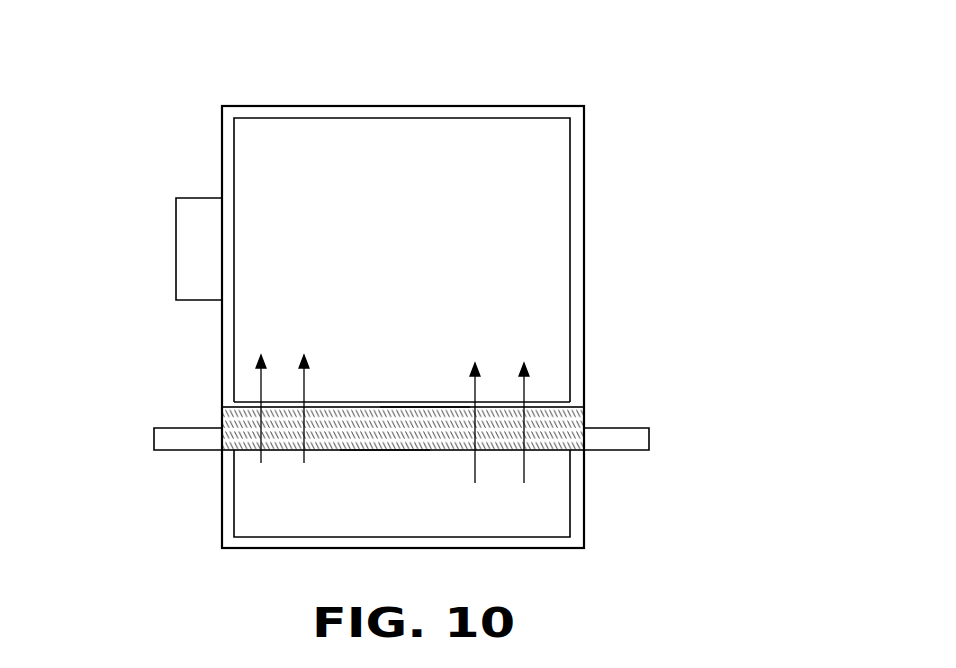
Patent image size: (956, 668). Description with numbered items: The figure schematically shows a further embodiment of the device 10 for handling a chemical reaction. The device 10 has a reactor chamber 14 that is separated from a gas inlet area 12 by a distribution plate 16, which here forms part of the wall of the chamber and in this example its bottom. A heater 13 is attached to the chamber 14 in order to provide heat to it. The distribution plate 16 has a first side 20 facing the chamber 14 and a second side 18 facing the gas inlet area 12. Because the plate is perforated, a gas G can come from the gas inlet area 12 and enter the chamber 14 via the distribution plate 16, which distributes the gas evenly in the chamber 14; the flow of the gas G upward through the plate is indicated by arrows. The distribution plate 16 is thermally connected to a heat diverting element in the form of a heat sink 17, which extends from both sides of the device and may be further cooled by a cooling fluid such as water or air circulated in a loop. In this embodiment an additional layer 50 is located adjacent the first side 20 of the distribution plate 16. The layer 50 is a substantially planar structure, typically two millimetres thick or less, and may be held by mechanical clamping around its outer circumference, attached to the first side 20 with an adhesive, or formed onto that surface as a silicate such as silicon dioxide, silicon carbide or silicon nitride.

The device 10 is at (636, 217).
The gas inlet area 12 is at (454, 517).
The heater 13 is at (176, 248).
The reactor chamber 14 is at (432, 198).
The distribution plate 16 is at (448, 440).
The heat sink 17 is at (154, 440).
The second side 18 is at (377, 450).
The first side 20 is at (423, 407).
The additional layer 50 is at (538, 401).
The gas G is at (392, 436).